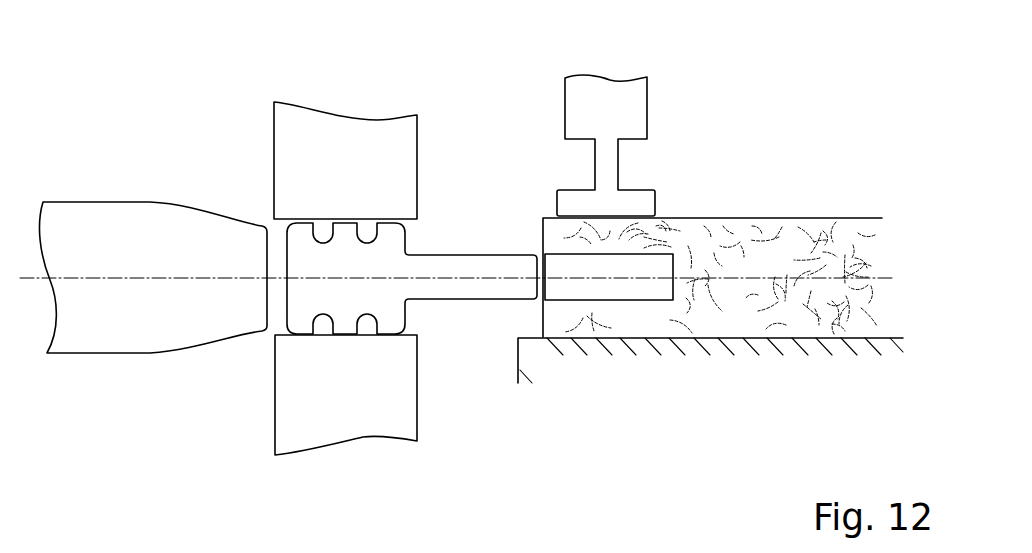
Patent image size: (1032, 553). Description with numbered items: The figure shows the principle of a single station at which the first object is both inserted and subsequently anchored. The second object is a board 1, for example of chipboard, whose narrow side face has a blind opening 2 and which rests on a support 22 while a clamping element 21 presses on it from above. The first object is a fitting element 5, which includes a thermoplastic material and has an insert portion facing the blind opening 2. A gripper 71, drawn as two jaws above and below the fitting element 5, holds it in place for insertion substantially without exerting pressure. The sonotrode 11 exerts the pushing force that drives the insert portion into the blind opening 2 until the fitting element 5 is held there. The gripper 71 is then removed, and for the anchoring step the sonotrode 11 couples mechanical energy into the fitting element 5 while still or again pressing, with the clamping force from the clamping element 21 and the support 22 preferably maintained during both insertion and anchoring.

The board 1 is at (765, 240).
The blind opening 2 is at (603, 283).
The fitting element 5 is at (390, 283).
The sonotrode 11 is at (180, 300).
The clamping element 21 is at (575, 203).
The support 22 is at (777, 393).
The gripper 71 is at (340, 167).